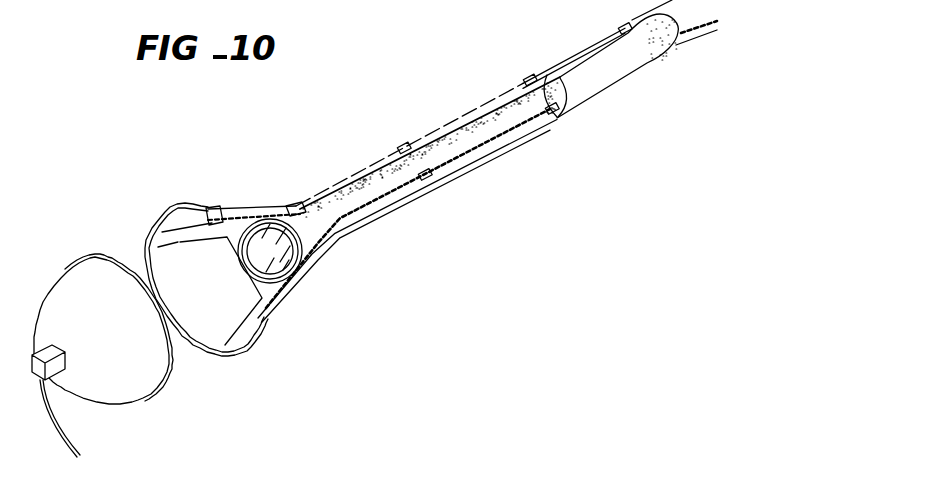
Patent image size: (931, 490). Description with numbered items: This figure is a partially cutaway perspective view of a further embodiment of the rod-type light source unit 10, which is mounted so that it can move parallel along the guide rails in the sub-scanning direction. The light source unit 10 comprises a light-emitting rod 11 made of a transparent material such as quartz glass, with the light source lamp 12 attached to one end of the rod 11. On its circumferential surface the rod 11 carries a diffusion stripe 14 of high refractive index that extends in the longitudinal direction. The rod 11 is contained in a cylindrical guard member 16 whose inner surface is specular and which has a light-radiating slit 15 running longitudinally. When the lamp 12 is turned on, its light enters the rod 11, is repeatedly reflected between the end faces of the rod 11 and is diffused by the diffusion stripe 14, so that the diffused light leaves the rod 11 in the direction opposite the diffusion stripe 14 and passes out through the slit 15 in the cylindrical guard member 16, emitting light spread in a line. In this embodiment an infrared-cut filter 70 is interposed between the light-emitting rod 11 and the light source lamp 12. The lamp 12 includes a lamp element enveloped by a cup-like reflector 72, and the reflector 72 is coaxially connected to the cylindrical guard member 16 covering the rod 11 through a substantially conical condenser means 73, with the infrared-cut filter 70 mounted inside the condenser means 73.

The light source unit 10 is at (449, 224).
The light-emitting rod 11 is at (437, 140).
The light source lamp 12 is at (373, 312).
The diffusion stripe 14 is at (498, 152).
The light-radiating slit 15 is at (560, 62).
The cylindrical guard member 16 is at (606, 79).
The infrared-cut filter 70 is at (285, 276).
The cup-like reflector 72 is at (133, 372).
The condenser means 73 is at (275, 295).